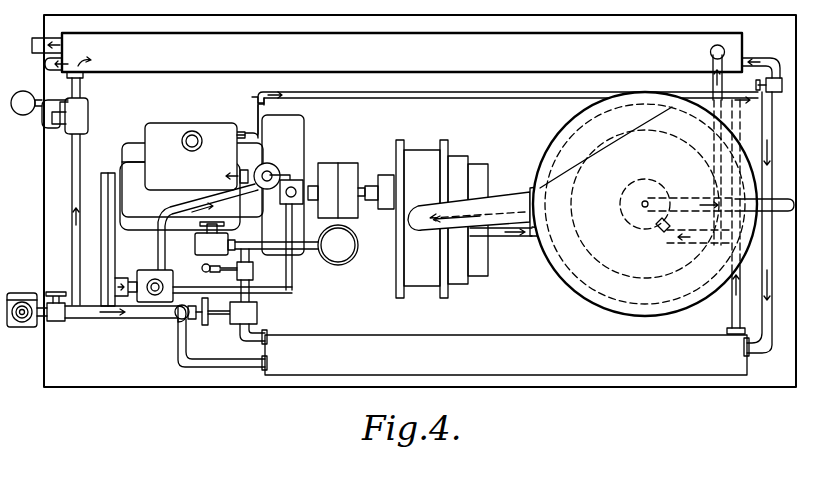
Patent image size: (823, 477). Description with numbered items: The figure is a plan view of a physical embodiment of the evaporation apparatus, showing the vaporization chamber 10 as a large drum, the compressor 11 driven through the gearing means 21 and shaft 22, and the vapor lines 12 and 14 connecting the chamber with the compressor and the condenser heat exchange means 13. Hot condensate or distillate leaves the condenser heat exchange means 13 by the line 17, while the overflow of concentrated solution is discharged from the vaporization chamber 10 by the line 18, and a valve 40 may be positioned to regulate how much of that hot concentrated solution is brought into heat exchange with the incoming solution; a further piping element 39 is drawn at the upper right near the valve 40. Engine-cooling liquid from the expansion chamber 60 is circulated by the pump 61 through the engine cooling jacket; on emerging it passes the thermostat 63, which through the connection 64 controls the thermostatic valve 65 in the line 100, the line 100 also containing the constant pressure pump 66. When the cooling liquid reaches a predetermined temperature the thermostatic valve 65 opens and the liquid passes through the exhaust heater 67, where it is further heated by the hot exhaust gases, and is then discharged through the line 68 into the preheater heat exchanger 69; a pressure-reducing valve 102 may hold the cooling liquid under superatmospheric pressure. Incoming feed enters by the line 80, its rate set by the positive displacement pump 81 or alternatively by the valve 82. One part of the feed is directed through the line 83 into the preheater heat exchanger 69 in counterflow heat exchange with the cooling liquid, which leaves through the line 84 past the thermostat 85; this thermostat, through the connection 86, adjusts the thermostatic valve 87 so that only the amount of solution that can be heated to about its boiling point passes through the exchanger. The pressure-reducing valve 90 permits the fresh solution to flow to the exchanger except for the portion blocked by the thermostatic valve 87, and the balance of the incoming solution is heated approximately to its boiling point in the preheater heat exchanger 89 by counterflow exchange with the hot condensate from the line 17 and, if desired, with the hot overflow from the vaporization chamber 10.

The vaporization chamber 10 is at (556, 142).
The compressor 11 is at (423, 280).
The vapor line 12 is at (500, 205).
The condenser heat exchange means 13 is at (630, 298).
The vapor line 14 is at (509, 238).
The condensate discharge line 17 is at (690, 196).
The overflow line 18 is at (769, 214).
The gearing means 21 is at (346, 170).
The shaft 22 is at (372, 185).
The pipe 39 is at (765, 58).
The valve 40 is at (732, 138).
The expansion chamber 60 is at (340, 263).
The pump 61 is at (196, 246).
The thermostat 63 is at (298, 186).
The connection 64 is at (291, 178).
The thermostatic valve 65 is at (267, 170).
The constant pressure pump 66 is at (147, 272).
The exhaust heater 67 is at (168, 130).
The line 68 is at (318, 100).
The preheater heat exchanger 69 is at (365, 345).
The feed line 80 is at (30, 327).
The positive displacement pump 81 is at (30, 296).
The valve 82 is at (56, 322).
The line 83 is at (100, 320).
The line 84 is at (270, 349).
The thermostat 85 is at (258, 313).
The connection 86 is at (214, 325).
The thermostatic valve 87 is at (190, 320).
The preheater heat exchanger 89 is at (387, 52).
The pressure-reducing valve 90 is at (68, 120).
The line 100 is at (182, 210).
The pressure-reducing valve 102 is at (252, 272).